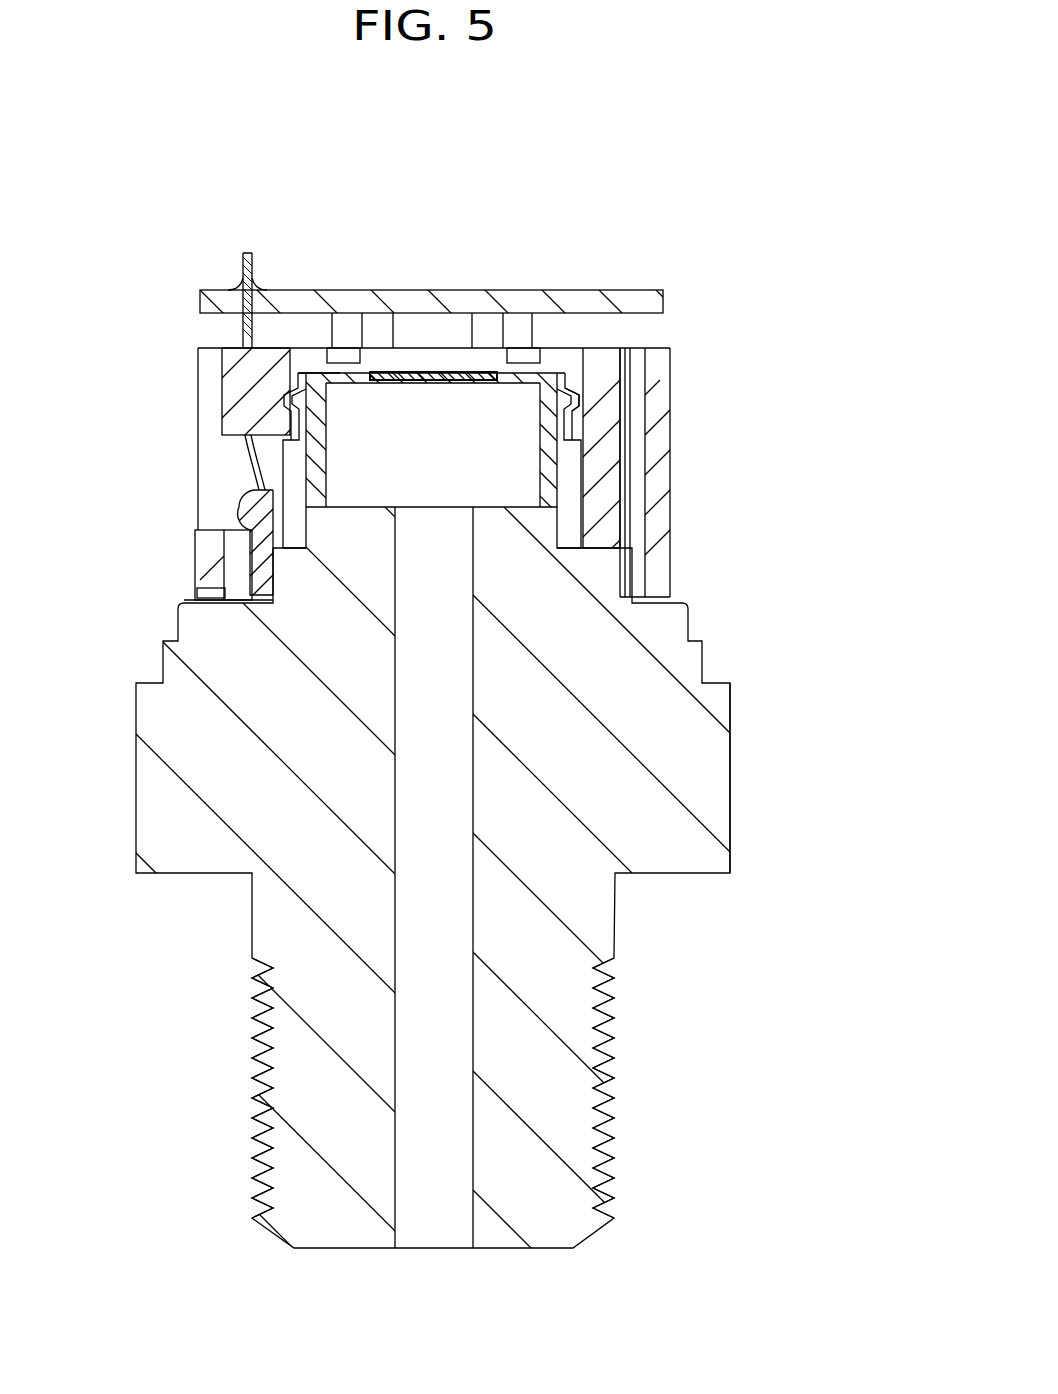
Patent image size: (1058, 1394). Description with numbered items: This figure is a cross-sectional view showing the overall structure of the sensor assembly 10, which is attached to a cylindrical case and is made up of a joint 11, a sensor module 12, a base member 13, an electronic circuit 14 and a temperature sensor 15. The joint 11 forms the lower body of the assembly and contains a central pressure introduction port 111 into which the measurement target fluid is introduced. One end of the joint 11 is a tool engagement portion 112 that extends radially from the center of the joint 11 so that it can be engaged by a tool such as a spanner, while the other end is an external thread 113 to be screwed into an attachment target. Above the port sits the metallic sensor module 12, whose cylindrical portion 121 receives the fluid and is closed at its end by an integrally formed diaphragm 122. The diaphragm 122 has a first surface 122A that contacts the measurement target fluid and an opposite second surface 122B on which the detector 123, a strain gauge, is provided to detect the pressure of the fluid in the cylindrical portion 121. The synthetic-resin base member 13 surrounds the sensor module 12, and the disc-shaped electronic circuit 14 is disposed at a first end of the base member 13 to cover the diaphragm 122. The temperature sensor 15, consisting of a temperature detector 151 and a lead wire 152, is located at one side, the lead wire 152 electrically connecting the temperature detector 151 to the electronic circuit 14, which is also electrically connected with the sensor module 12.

The sensor assembly 10 is at (775, 176).
The joint 11 is at (777, 738).
The pressure introduction port 111 is at (474, 1022).
The tool engagement portion 112 is at (733, 820).
The external thread 113 is at (598, 1156).
The sensor module 12 is at (566, 467).
The cylindrical portion 121 is at (484, 384).
The diaphragm 122 is at (545, 372).
The first surface 122A is at (582, 410).
The second surface 122B is at (326, 372).
The detector 123 is at (431, 371).
The base member 13 is at (680, 516).
The electronic circuit 14 is at (604, 246).
The temperature sensor 15 is at (230, 512).
The temperature detector 151 is at (253, 561).
The lead wire 152 is at (253, 452).